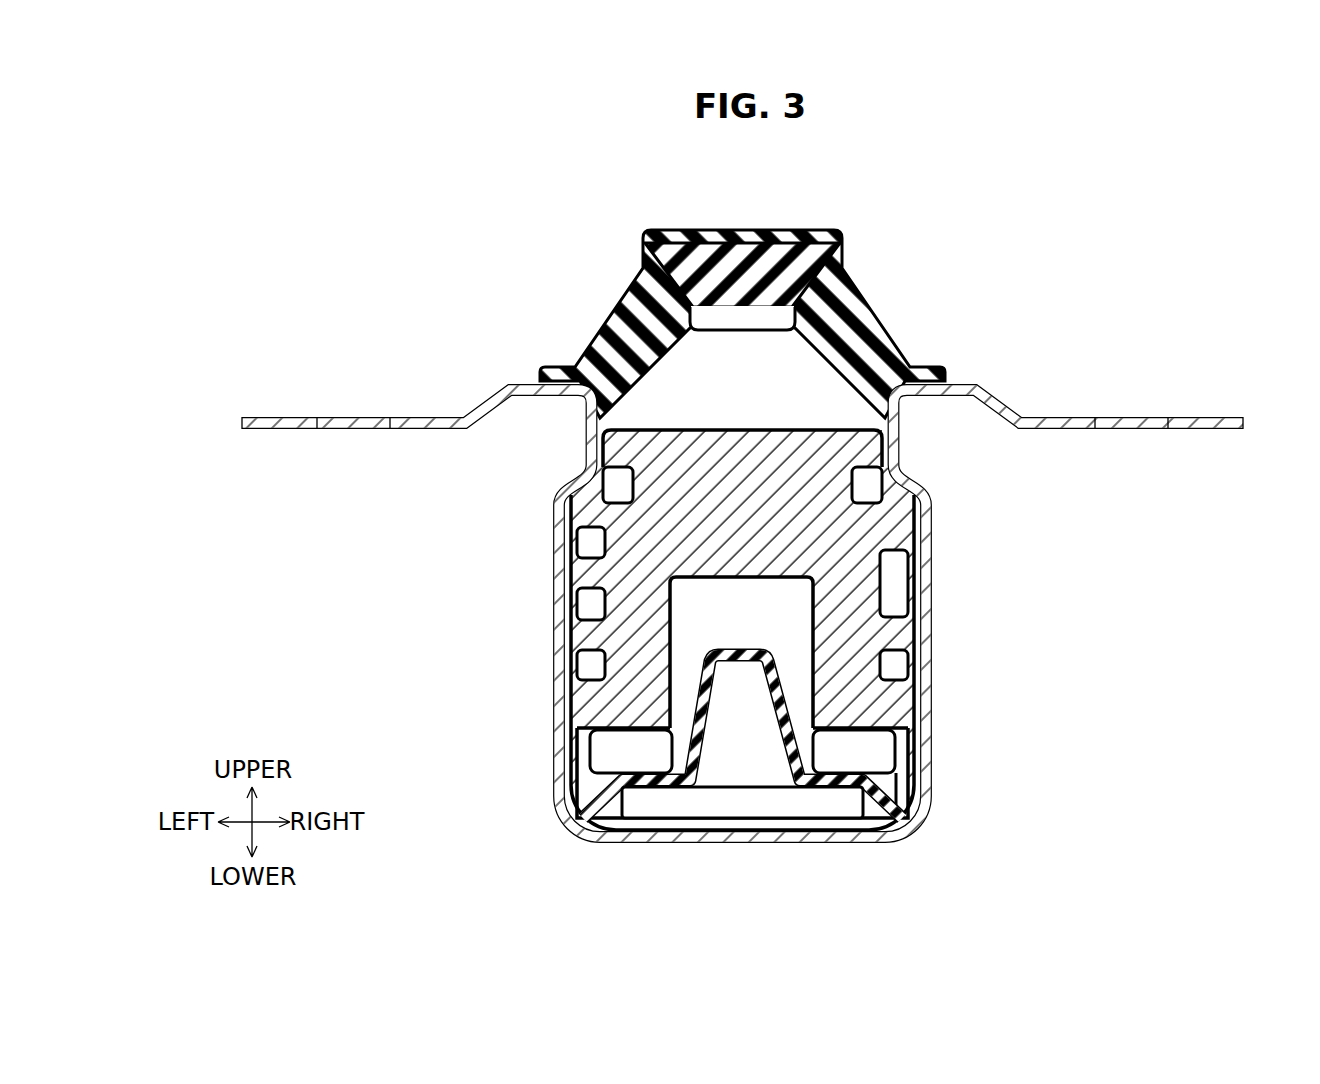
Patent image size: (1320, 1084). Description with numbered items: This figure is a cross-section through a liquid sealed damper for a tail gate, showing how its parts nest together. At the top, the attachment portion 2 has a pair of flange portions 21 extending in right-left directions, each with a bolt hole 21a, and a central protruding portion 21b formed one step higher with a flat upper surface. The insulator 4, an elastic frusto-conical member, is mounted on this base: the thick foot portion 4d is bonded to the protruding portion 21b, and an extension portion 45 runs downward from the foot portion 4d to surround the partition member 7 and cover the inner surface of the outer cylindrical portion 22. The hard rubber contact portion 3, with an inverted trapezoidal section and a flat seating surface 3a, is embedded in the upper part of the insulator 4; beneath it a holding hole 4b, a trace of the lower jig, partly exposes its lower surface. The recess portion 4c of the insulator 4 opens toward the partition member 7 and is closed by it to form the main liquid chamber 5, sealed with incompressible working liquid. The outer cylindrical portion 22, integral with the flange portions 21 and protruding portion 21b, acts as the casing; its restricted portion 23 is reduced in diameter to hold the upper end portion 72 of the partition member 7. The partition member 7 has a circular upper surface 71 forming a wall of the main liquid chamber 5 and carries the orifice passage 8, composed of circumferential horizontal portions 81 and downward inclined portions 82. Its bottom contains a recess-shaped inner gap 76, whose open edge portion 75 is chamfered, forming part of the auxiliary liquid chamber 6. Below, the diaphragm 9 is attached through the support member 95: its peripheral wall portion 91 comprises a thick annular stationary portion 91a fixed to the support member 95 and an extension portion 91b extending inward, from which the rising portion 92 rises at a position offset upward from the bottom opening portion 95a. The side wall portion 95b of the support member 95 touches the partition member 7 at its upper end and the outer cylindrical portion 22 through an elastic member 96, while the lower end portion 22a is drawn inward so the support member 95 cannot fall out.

The attachment portion 2 is at (1217, 405).
The contact portion 3 is at (745, 255).
The seating surface 3a is at (712, 236).
The insulator 4 is at (848, 291).
The holding hole 4b is at (732, 312).
The recess portion 4c is at (645, 348).
The foot portion 4d is at (573, 377).
The main liquid chamber 5 is at (733, 409).
The auxiliary liquid chamber 6 is at (733, 628).
The partition member 7 is at (883, 532).
The orifice passage 8 is at (742, 573).
The diaphragm 9 is at (663, 805).
The flange portion 21 is at (277, 416).
The bolt hole 21a is at (390, 417).
The protruding portion 21b is at (530, 381).
The outer cylindrical portion 22 is at (933, 728).
The lower end portion 22a is at (915, 833).
The restricted portion 23 is at (580, 441).
The extension portion 45 is at (888, 657).
The upper surface 71 is at (795, 430).
The upper end portion 72 is at (697, 478).
The open edge portion 75 is at (822, 702).
The inner gap 76 is at (788, 593).
The horizontal portion 81 is at (568, 515).
The inclined portion 82 is at (892, 597).
The peripheral wall portion 91 is at (742, 773).
The stationary portion 91a is at (590, 827).
The extension portion 91b is at (595, 757).
The rising portion 92 is at (707, 698).
The support member 95 is at (870, 820).
The bottom opening portion 95a is at (740, 826).
The side wall portion 95b is at (905, 808).
The elastic member 96 is at (913, 775).